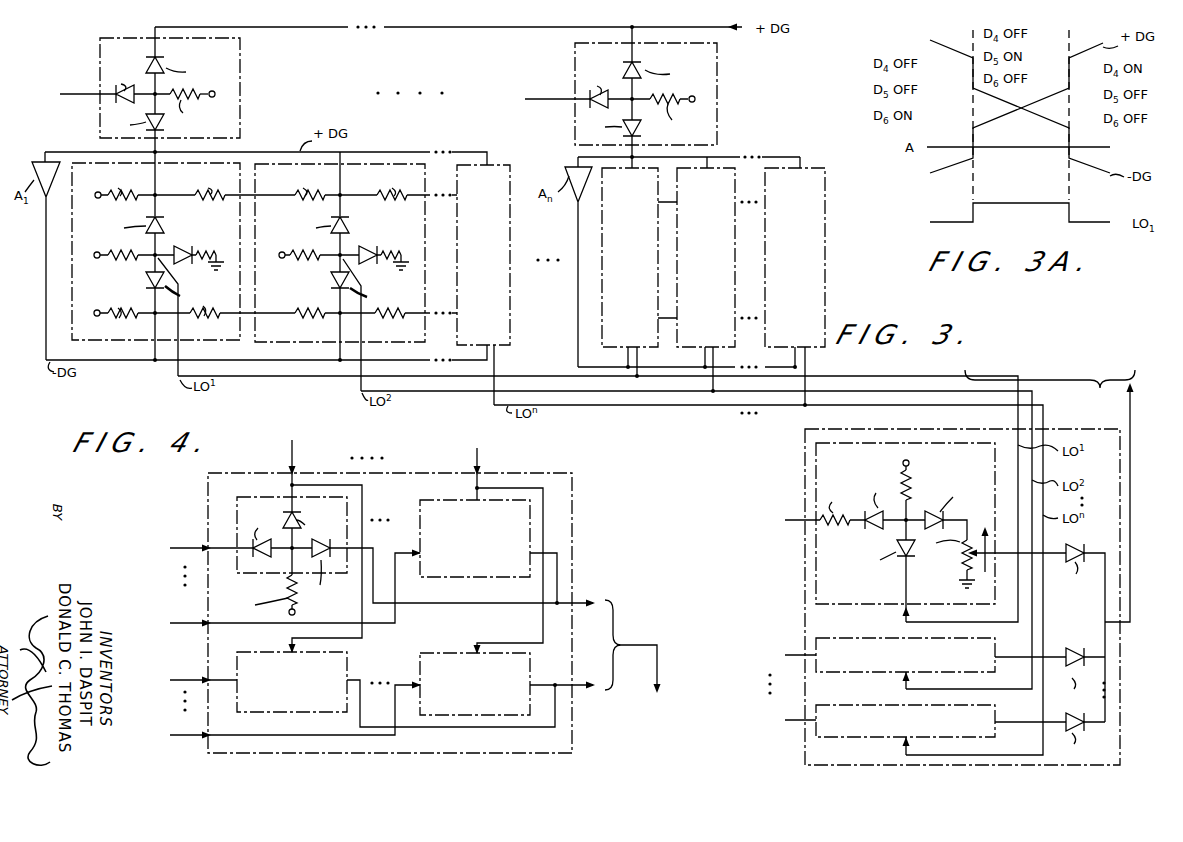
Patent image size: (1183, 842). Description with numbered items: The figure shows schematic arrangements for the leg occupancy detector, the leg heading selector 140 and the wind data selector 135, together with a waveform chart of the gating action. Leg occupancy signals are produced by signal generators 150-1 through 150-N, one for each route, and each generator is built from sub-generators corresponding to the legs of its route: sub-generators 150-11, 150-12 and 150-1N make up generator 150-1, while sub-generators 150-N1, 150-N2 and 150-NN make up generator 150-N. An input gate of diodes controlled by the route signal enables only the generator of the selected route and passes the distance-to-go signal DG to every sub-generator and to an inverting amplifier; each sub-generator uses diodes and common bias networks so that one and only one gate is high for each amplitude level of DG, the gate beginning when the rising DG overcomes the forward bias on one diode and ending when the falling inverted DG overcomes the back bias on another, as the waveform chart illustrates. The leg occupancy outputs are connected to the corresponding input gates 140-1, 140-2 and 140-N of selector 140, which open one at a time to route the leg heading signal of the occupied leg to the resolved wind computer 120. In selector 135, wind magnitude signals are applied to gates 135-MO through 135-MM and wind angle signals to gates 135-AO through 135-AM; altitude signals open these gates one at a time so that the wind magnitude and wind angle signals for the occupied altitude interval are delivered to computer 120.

In FIG. 3, the signal generator 150-1 is at (253, 100).
In FIG. 3, the signal generator 150-N is at (732, 105).
In FIG. 3, the sub-generator 150-11 is at (150, 343).
In FIG. 3, the sub-generator 150-12 is at (272, 344).
In FIG. 3, the sub-generator 150-1N is at (470, 350).
In FIG. 3, the sub-generator 150-N1 is at (607, 350).
In FIG. 3, the sub-generator 150-N2 is at (687, 350).
In FIG. 3, the sub-generator 150-NN is at (778, 350).
In FIG. 3, the resolved wind computer 120 is at (1050, 478).
In FIG. 4, the resolved wind computer 120 is at (656, 678).
In FIG. 3, the leg heading selector 140 is at (931, 597).
In FIG. 3, the input gate 140-1 is at (820, 606).
In FIG. 3, the input gate 140-2 is at (820, 674).
In FIG. 3, the input gate 140-N is at (820, 739).
In FIG. 4, the wind data selector 135 is at (385, 596).
In FIG. 4, the wind magnitude gate 135-MO is at (236, 560).
In FIG. 4, the wind magnitude gate 135-MM is at (432, 580).
In FIG. 4, the wind angle gate 135-AO is at (250, 712).
In FIG. 4, the wind angle gate 135-AM is at (432, 716).